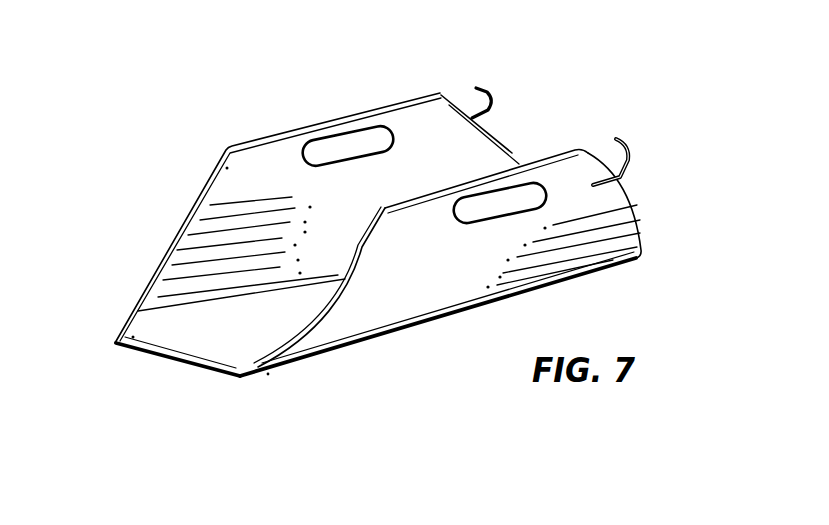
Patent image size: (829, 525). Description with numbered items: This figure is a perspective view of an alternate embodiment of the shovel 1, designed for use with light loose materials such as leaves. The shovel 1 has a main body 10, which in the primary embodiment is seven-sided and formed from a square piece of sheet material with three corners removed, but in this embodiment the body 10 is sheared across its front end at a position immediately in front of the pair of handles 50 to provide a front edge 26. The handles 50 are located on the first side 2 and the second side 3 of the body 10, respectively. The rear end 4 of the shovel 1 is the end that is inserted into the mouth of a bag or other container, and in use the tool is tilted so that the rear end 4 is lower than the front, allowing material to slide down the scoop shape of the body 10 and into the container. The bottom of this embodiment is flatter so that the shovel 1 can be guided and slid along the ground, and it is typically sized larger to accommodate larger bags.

The shovel 1 is at (165, 209).
The first side 2 is at (371, 398).
The second side 3 is at (229, 123).
The rear end 4 is at (571, 116).
The main body 10 is at (592, 242).
The front edge 26 is at (155, 352).
The handles 50 is at (357, 125).